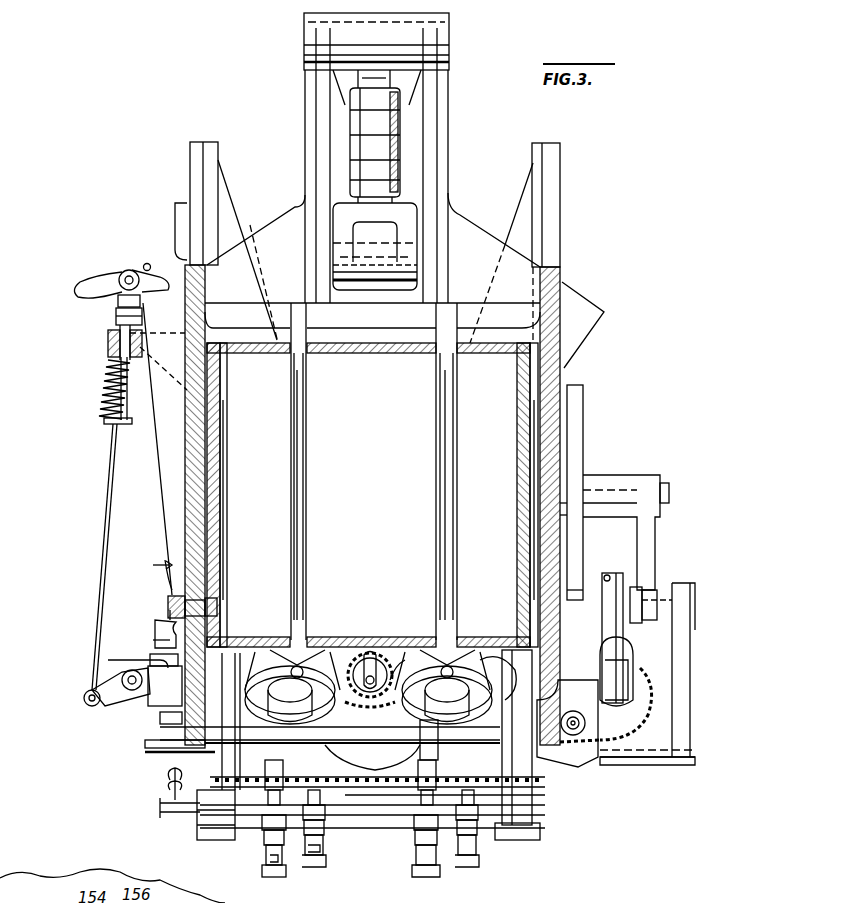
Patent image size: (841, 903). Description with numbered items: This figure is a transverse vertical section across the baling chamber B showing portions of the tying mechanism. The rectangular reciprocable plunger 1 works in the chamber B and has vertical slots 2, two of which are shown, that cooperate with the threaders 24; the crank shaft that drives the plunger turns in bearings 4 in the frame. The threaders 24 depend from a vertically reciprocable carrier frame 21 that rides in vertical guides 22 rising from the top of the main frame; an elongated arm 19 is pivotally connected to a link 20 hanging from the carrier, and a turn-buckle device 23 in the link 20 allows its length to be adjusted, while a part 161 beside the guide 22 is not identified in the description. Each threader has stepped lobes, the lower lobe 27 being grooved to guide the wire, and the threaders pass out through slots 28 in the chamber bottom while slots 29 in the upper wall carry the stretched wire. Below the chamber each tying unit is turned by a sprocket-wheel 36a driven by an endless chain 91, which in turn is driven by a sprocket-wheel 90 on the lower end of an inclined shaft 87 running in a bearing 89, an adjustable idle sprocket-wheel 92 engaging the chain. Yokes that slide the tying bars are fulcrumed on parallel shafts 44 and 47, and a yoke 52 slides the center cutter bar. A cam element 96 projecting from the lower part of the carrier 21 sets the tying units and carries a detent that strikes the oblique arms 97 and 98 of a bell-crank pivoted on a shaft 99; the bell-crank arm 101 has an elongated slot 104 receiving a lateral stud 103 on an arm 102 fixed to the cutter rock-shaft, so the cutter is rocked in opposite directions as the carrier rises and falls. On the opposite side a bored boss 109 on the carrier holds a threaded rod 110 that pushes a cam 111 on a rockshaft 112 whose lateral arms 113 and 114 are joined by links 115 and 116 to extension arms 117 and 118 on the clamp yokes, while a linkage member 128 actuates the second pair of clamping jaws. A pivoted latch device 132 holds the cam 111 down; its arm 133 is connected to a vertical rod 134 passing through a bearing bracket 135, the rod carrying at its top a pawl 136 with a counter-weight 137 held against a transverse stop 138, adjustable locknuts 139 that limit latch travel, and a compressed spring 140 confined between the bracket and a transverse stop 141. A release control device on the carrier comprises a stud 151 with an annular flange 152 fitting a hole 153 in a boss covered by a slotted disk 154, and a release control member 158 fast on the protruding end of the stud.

The plunger 1 is at (372, 428).
The vertical slots 2 is at (305, 470).
The bearings 4 is at (147, 600).
The elongated arm 19 is at (388, 237).
The link 20 is at (400, 212).
The vertically reciprocable carrier frame 21 is at (287, 218).
The vertically disposed guides 22 is at (200, 190).
The turn-buckle device 23 is at (398, 137).
The threaders 24 is at (300, 433).
The lobe 27 is at (302, 870).
The slots 28 is at (322, 640).
The slots 29 is at (308, 344).
The sprocket-wheel 36a is at (338, 755).
The shaft 44 is at (380, 828).
The shaft 47 is at (398, 812).
The yoke 52 is at (697, 752).
The inclined shaft 87 is at (612, 580).
The bearing 89 is at (630, 660).
The sprocket-wheel 90 is at (650, 690).
The endless chain 91 is at (655, 715).
The adjustable idle sprocket-wheel 92 is at (372, 650).
The cam element 96 is at (592, 765).
The bell-crank arm 97 is at (580, 405).
The bell-crank arm 98 is at (572, 545).
The shaft 99 is at (668, 485).
The arm 101 is at (645, 525).
The arm 102 is at (690, 620).
The lateral stud 103 is at (635, 590).
The elongated slot 104 is at (650, 595).
The bored boss 109 is at (155, 695).
The threaded rod 110 is at (165, 720).
The cam 111 is at (170, 744).
The rockshaft 112 is at (205, 755).
The arm 113 is at (245, 756).
The arm 114 is at (430, 758).
The link 115 is at (262, 840).
The link 116 is at (450, 865).
The extension arm 117 is at (262, 873).
The extension arm 118 is at (425, 870).
The linkage member 128 is at (485, 840).
The pivoted latch device 132 is at (118, 705).
The arm 133 is at (84, 697).
The elongated rod 134 is at (100, 600).
The bearing bracket 135 is at (108, 348).
The pawl 136 is at (158, 262).
The counter-weight 137 is at (82, 283).
The transverse stop 138 is at (144, 264).
The adjustable locknuts 139 is at (116, 322).
The compressed spring 140 is at (108, 393).
The transverse stop 141 is at (104, 422).
The stud 151 is at (210, 608).
The annular flange 152 is at (208, 618).
The small hole 153 is at (214, 610).
The disk 154 is at (162, 565).
The release control member 158 is at (158, 625).
The bracket 161 is at (176, 225).
The baling chamber B is at (400, 308).